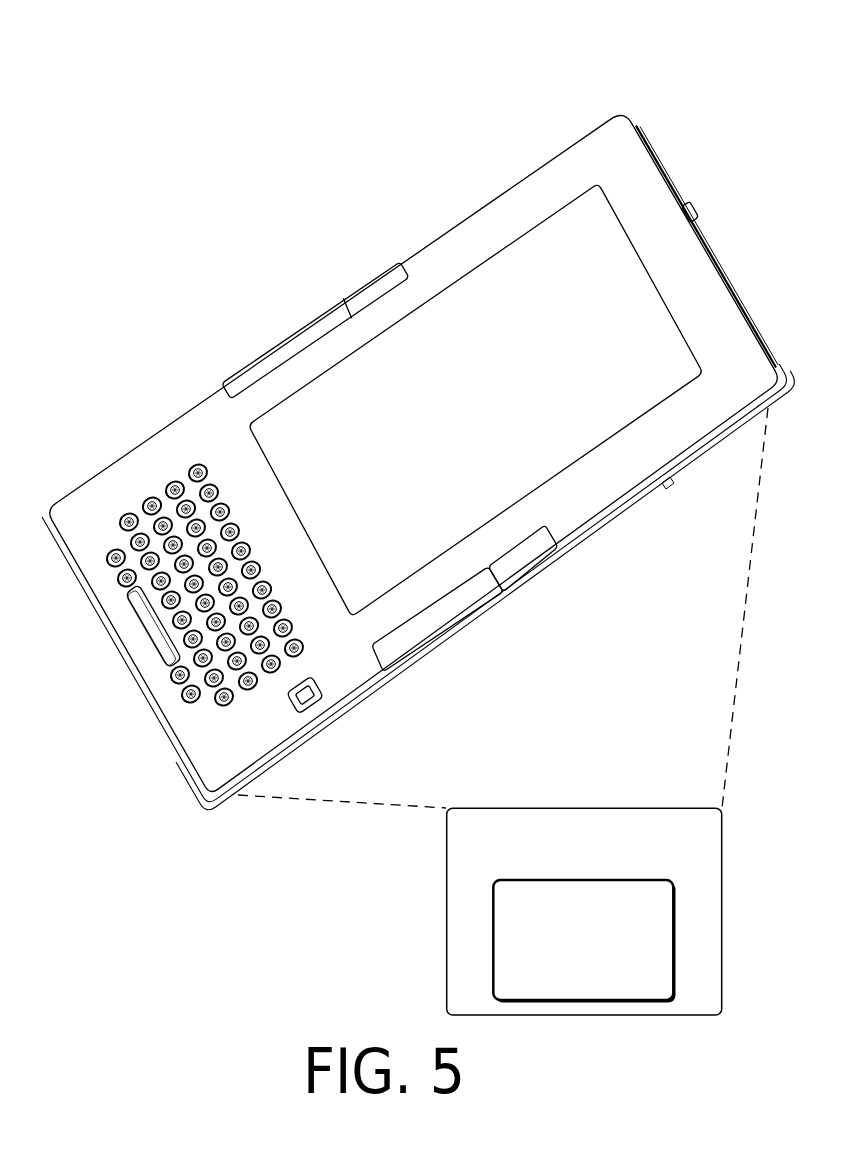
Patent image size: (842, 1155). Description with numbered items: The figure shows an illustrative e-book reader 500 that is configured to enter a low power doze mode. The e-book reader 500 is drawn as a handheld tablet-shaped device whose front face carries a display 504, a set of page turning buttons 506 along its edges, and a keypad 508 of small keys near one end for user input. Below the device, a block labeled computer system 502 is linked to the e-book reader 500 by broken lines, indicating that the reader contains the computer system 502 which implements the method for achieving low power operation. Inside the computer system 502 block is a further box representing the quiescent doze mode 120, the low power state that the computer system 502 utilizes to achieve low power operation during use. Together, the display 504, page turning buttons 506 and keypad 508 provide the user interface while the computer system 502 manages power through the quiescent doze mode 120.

The e-book reader 500 is at (708, 56).
The computer system 502 is at (568, 861).
The display 504 is at (505, 290).
The page turning buttons 506 is at (298, 345).
The keypad 508 is at (159, 524).
The quiescent doze mode 120 is at (568, 988).